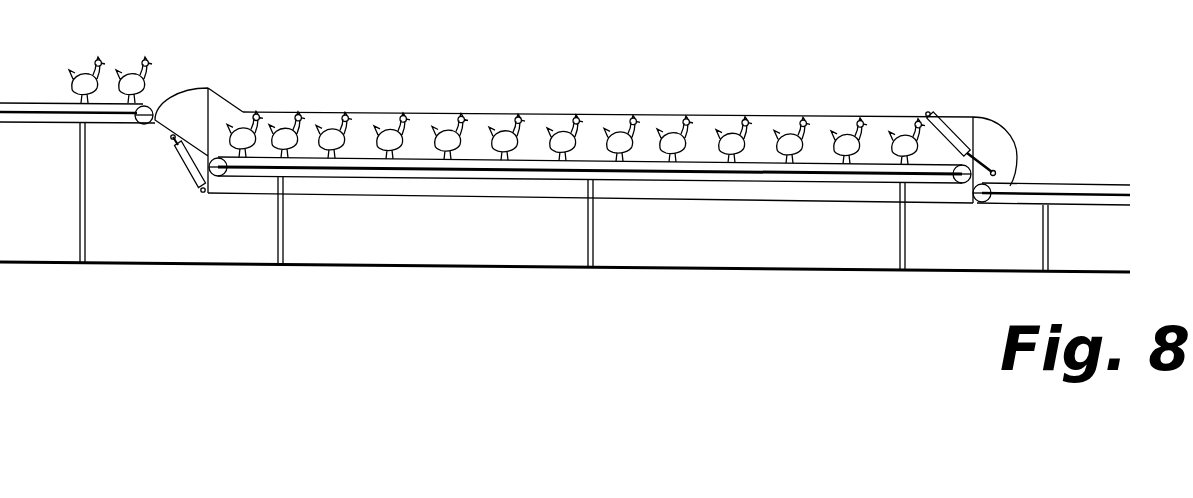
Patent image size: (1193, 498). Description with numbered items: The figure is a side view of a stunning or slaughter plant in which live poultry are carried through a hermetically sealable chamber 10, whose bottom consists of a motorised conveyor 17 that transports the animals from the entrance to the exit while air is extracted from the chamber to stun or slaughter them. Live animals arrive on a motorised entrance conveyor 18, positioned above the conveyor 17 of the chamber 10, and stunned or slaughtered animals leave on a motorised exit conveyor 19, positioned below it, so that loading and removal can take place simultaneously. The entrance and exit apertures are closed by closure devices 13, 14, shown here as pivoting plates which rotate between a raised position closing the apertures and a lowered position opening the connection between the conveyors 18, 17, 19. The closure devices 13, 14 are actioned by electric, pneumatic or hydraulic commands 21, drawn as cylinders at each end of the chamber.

The hermetically sealable chamber 10 is at (519, 101).
The closure device 13 is at (167, 128).
The closure device 14 is at (1012, 167).
The motorised conveyor 17 is at (427, 176).
The motorised entrance conveyor 18 is at (55, 125).
The motorised exit conveyor 19 is at (1092, 183).
The commands 21 is at (947, 118).